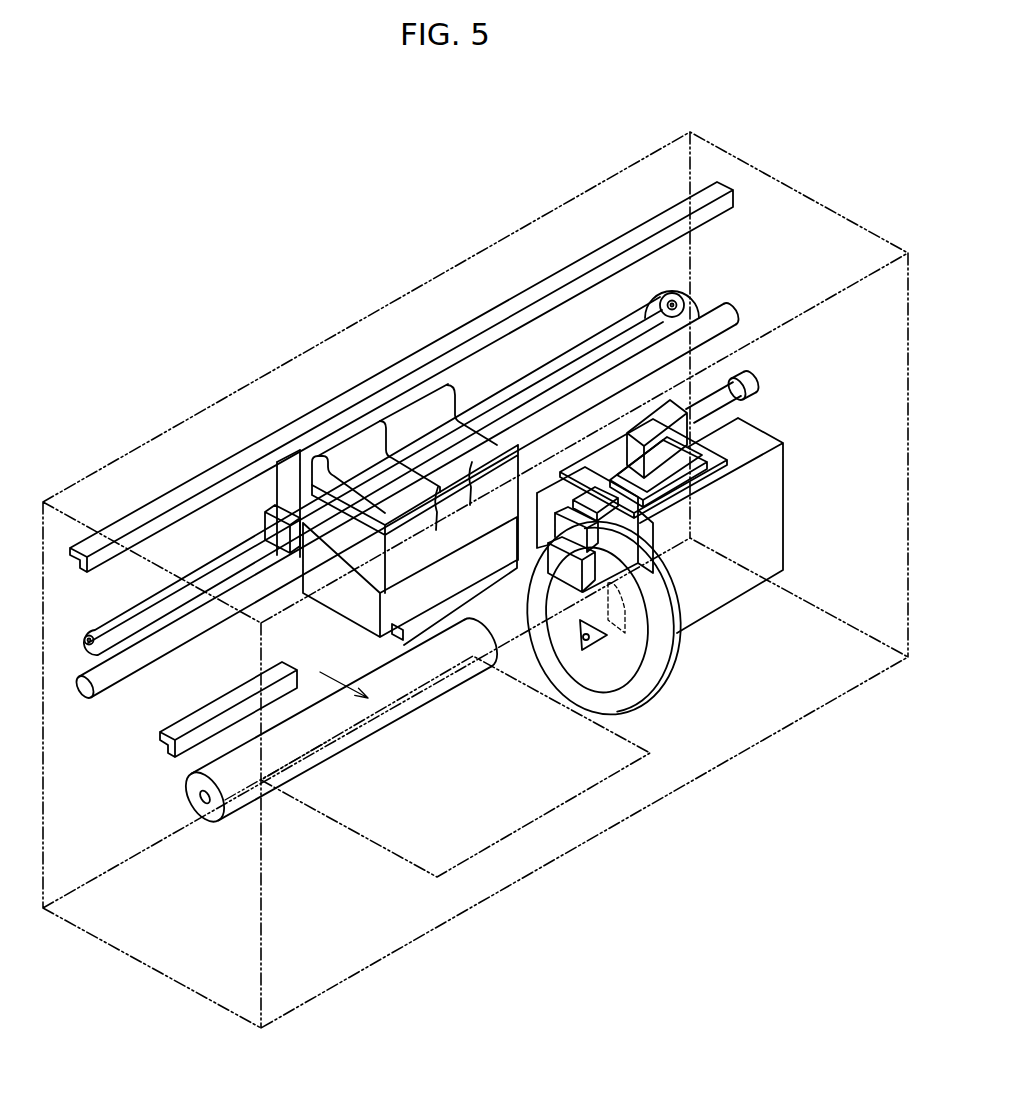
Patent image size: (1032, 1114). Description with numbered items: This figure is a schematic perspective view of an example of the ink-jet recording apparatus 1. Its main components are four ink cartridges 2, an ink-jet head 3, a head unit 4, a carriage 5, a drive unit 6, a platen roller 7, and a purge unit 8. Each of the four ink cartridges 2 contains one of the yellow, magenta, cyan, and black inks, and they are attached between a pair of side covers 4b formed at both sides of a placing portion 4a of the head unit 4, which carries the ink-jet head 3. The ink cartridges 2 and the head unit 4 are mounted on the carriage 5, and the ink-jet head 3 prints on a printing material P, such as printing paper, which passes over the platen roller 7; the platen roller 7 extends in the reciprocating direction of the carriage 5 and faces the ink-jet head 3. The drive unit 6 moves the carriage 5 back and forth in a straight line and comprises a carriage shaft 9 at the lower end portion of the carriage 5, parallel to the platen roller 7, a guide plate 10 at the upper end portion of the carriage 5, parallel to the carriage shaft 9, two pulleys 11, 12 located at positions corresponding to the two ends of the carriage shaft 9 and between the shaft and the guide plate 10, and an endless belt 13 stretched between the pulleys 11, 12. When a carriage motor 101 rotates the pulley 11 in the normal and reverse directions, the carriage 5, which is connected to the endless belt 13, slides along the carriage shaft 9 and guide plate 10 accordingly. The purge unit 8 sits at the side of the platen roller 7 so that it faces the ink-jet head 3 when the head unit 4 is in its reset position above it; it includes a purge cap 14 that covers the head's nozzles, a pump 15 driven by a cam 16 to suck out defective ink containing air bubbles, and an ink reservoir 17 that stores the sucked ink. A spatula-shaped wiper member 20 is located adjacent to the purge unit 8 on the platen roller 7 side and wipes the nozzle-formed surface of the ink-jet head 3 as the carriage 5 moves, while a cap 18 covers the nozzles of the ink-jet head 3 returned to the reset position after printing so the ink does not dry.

The ink-jet recording apparatus 1 is at (347, 143).
The ink cartridges 2 is at (353, 342).
The ink-jet head 3 is at (415, 509).
The head unit 4 is at (415, 556).
The placing portion 4a is at (397, 631).
The side covers 4b is at (367, 605).
The carriage 5 is at (282, 478).
The drive unit 6 is at (754, 272).
The platen roller 7 is at (347, 723).
The purge unit 8 is at (671, 581).
The carriage shaft 9 is at (725, 318).
The guide plate 10 is at (717, 182).
The pulley 11 is at (672, 301).
The pulley 12 is at (91, 634).
The endless belt 13 is at (591, 350).
The purge cap 14 is at (672, 548).
The pump 15 is at (625, 597).
The cam 16 is at (630, 679).
The ink reservoir 17 is at (784, 560).
The cap 18 is at (742, 441).
The wiper member 20 is at (572, 537).
The carriage motor 101 is at (698, 304).
The printing material P is at (400, 838).